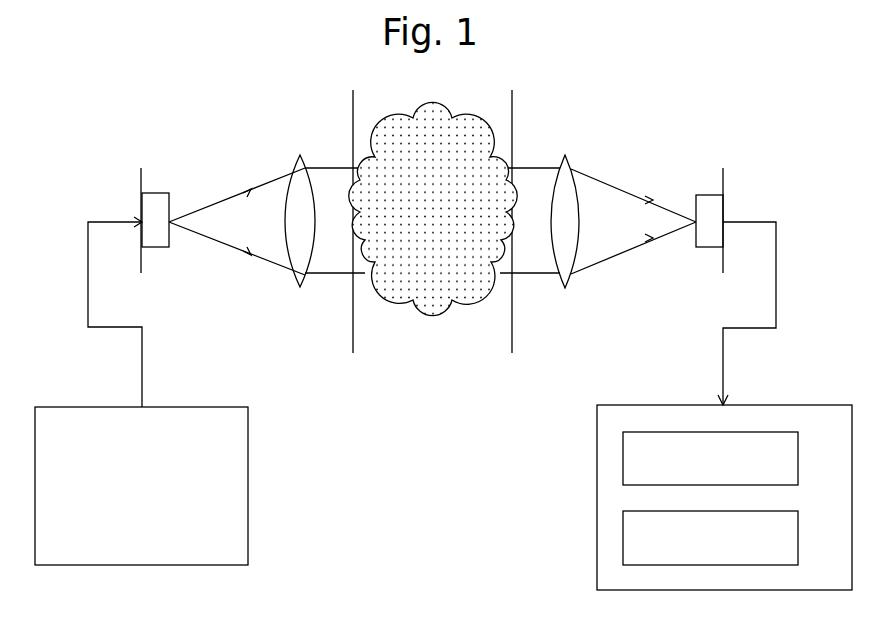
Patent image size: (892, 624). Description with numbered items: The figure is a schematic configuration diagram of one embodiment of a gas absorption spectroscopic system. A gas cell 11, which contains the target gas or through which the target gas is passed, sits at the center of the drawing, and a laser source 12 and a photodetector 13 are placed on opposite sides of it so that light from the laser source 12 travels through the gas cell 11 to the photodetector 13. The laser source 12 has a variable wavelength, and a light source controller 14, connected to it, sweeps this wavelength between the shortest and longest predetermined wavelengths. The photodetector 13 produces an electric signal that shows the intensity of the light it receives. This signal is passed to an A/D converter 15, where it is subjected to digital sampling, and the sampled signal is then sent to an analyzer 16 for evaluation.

The gas cell 11 is at (353, 340).
The laser source 12 is at (158, 248).
The photodetector 13 is at (710, 248).
The light source controller 14 is at (248, 460).
The A/D converter 15 is at (798, 458).
The analyzer 16 is at (798, 535).